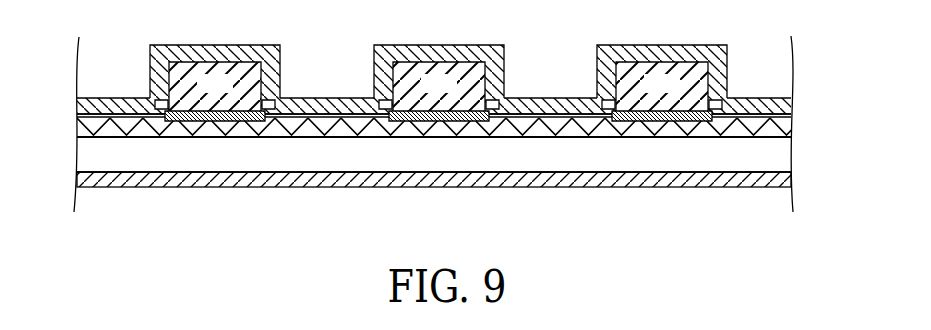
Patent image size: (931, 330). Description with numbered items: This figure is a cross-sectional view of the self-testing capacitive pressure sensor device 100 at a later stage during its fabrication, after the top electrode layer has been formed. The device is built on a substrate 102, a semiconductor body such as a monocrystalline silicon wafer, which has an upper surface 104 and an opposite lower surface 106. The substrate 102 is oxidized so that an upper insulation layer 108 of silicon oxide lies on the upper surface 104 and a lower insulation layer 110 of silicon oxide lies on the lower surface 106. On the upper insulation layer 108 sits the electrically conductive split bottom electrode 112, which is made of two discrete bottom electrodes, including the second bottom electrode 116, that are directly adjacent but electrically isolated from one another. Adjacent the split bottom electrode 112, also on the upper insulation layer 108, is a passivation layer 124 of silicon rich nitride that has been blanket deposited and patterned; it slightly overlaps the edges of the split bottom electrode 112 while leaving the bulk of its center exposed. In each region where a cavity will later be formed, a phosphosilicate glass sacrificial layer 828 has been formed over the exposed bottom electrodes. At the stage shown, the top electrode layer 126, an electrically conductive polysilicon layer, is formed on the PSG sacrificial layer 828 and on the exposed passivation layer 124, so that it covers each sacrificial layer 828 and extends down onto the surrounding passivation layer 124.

The self-testing capacitive pressure sensor device 100 is at (150, 227).
The substrate 102 is at (702, 167).
The upper surface 104 is at (682, 138).
The lower surface 106 is at (766, 175).
The upper insulation layer 108 is at (140, 130).
The lower insulation layer 110 is at (145, 178).
The split bottom electrode 112 is at (218, 121).
The second bottom electrode 116 is at (637, 121).
The passivation layer 124 is at (92, 100).
The top electrode layer 126 is at (398, 45).
The PSG sacrificial layer 828 is at (199, 92).